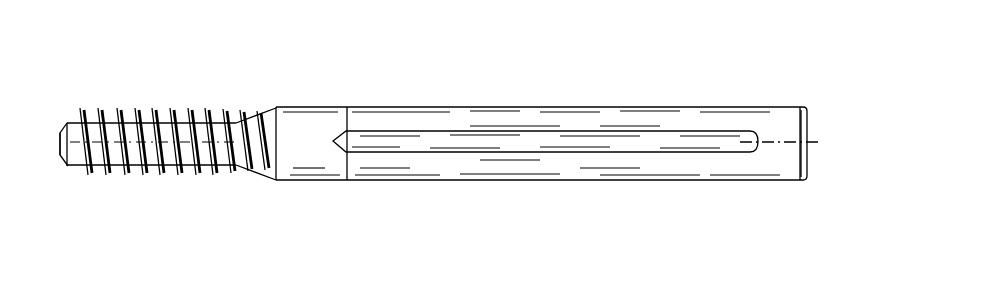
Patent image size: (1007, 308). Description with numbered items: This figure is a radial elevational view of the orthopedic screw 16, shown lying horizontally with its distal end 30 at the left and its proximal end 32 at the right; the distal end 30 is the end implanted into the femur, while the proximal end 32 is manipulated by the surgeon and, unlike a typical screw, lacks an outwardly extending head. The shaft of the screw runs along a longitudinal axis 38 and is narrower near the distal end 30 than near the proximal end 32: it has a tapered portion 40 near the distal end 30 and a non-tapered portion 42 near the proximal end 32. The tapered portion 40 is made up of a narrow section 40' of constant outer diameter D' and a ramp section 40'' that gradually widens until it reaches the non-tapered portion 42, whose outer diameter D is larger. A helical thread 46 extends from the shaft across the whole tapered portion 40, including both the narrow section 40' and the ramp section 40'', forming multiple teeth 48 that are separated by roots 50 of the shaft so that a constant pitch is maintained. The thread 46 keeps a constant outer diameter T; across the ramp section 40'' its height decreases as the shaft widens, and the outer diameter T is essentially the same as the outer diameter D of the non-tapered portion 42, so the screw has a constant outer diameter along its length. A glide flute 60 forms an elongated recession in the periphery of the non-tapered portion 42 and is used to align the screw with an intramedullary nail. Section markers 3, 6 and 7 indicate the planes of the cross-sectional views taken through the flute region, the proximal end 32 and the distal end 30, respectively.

The orthopedic screw 16 is at (565, 75).
The distal end 30 is at (54, 176).
The proximal end 32 is at (813, 158).
The longitudinal axis 38 is at (57, 133).
The tapered portion 40 is at (414, 134).
The narrow section 40' is at (142, 231).
The ramp section 40'' is at (247, 231).
The non-tapered portion 42 is at (416, 247).
The thread 46 is at (210, 92).
The teeth 48 is at (181, 167).
The root 50 is at (173, 168).
The glide flute 60 is at (556, 146).
The section line 3- 3 is at (509, 115).
The section line 6- 6 is at (818, 90).
The section line 7- 7 is at (45, 88).
The outer diameter of thread T is at (73, 174).
The outer diameter of non-tapered portion D is at (699, 117).
The outer diameter of narrow section D' is at (47, 168).